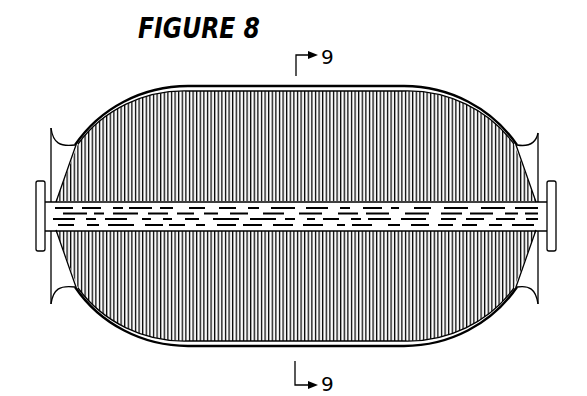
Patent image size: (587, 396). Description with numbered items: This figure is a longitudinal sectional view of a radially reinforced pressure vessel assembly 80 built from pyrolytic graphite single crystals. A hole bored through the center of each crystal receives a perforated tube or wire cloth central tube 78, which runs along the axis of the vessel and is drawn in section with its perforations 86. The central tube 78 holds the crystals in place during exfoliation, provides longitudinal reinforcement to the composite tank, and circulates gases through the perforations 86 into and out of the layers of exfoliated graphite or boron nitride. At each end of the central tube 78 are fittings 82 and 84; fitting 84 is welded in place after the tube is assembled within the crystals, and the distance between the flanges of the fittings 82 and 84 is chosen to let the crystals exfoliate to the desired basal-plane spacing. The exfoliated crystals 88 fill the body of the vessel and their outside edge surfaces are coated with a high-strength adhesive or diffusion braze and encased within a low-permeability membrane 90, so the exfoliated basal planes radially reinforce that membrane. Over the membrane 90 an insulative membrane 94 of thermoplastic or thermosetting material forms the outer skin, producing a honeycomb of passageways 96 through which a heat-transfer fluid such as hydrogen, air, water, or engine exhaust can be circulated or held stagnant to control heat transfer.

The central tube 78 is at (533, 224).
The roller assembly 80 is at (100, 54).
The fitting 82 is at (28, 243).
The fitting 84 is at (548, 176).
The perforations 86 is at (75, 198).
The exfoliated crystals 88 is at (395, 102).
The low-permeability membrane 90 is at (531, 148).
The insulative membrane 94 is at (332, 340).
The passageways 96 is at (387, 337).